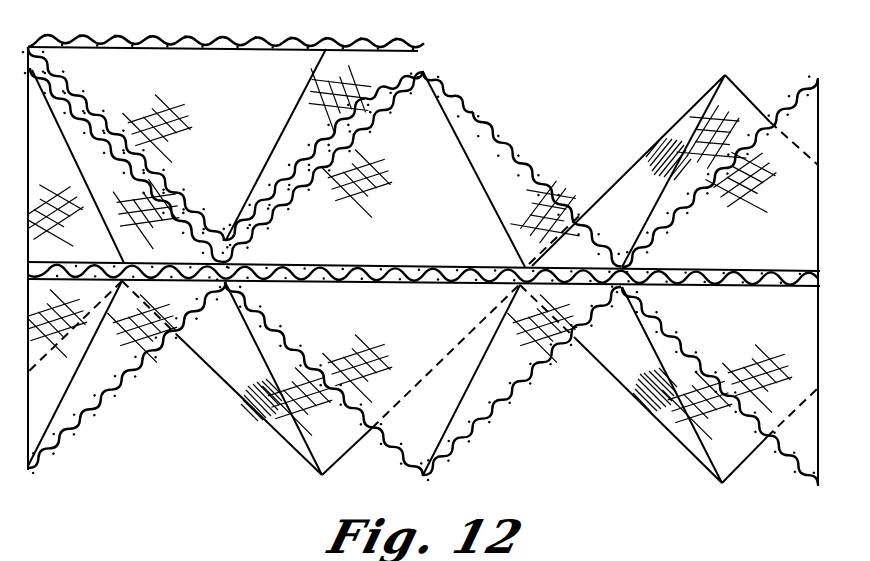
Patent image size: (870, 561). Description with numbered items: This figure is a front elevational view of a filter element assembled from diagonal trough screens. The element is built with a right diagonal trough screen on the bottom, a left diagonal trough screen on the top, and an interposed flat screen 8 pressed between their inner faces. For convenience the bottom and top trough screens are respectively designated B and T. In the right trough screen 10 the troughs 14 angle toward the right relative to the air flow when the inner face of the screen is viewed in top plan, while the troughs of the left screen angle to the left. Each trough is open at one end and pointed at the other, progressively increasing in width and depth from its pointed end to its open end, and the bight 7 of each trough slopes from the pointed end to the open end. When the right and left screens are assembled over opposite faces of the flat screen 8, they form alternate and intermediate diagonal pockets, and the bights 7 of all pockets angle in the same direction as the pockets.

The bight 7 is at (279, 148).
The flat screen 8 is at (153, 42).
The right trough screen 10 is at (472, 112).
The troughs 14 is at (413, 267).
The bottom trough screen B is at (420, 53).
The top trough screen T is at (518, 158).